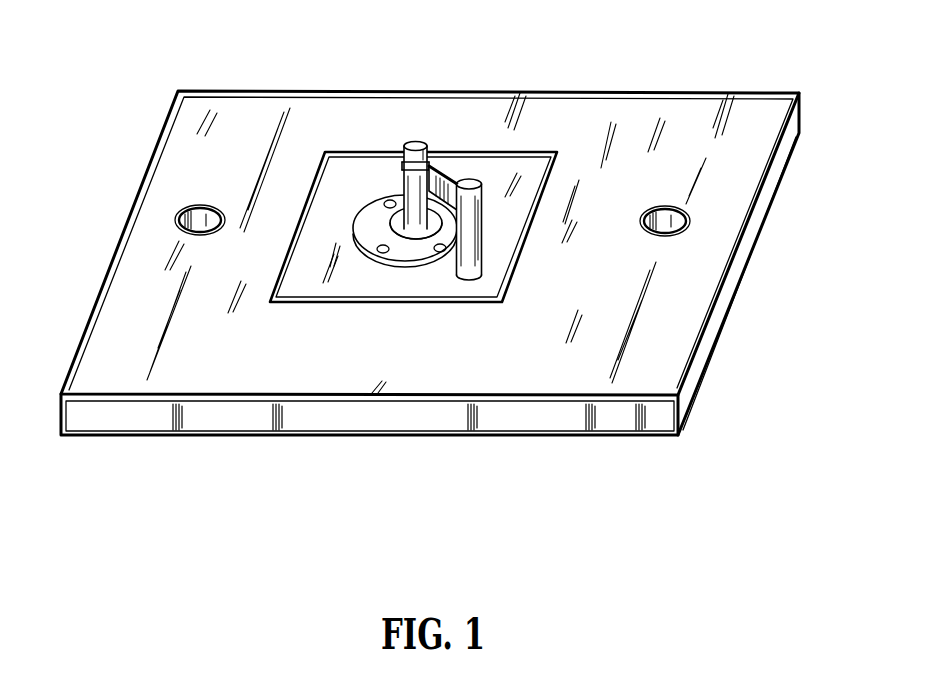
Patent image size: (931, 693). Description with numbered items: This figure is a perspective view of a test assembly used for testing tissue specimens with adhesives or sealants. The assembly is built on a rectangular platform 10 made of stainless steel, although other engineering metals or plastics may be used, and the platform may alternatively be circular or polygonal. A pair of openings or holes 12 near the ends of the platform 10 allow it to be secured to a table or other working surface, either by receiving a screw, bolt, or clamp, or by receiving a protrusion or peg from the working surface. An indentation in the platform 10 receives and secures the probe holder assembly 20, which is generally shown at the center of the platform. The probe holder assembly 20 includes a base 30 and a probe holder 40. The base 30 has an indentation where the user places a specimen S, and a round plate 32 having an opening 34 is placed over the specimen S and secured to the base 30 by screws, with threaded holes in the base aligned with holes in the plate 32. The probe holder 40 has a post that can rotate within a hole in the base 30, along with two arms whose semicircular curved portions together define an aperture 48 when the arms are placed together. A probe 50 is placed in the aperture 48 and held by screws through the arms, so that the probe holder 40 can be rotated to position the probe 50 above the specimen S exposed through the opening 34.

The platform 10 is at (768, 92).
The openings or holes 12 is at (192, 207).
The probe holder assembly 20 is at (485, 124).
The base 30 is at (538, 158).
The round plate 32 is at (420, 252).
The opening 34 is at (408, 232).
The probe holder 40 is at (483, 222).
The aperture 48 is at (430, 170).
The probe 50 is at (418, 145).
The specimen S is at (398, 210).